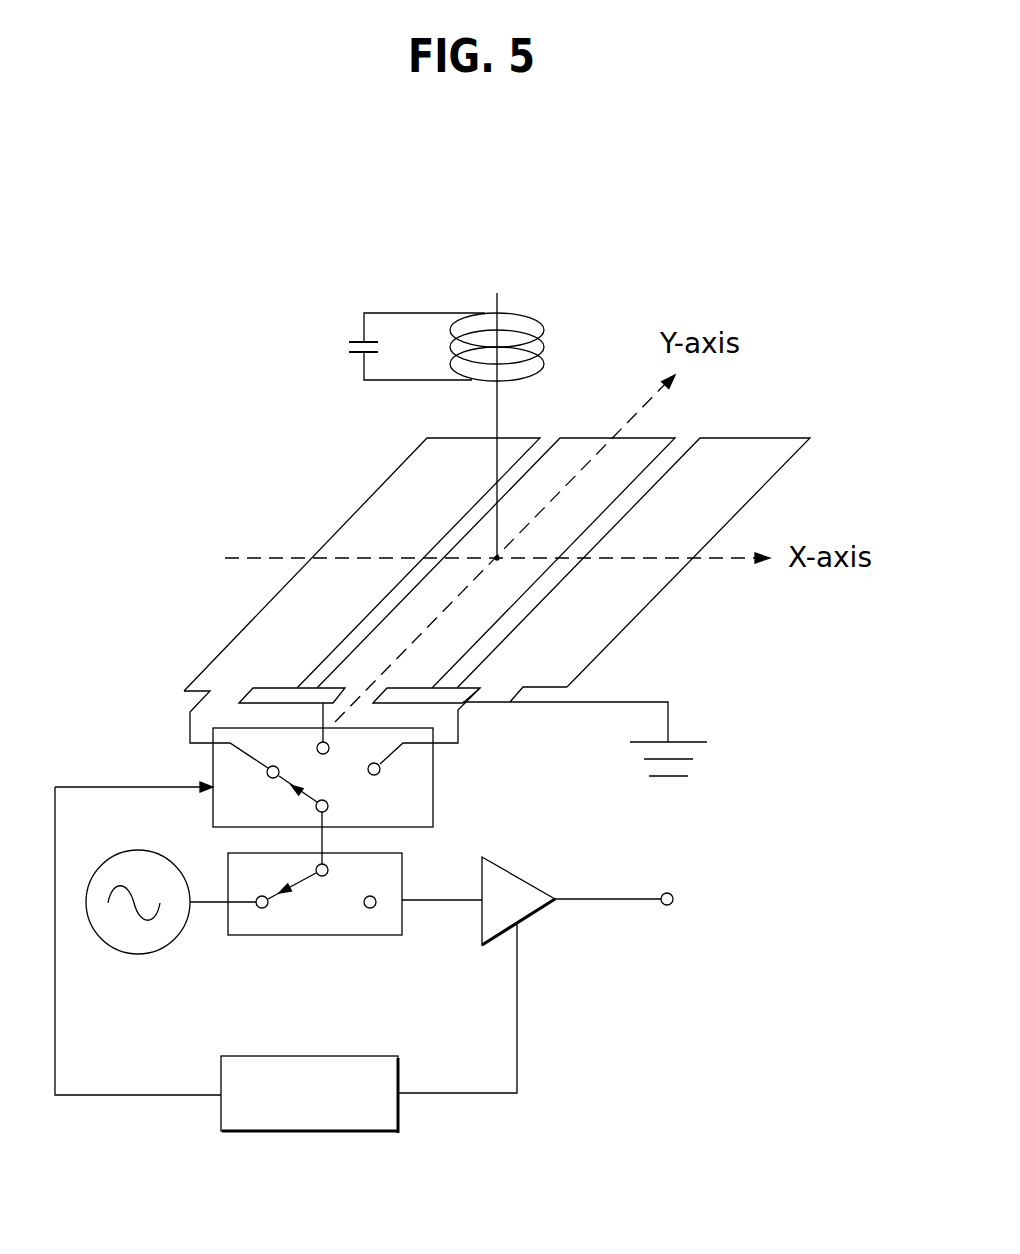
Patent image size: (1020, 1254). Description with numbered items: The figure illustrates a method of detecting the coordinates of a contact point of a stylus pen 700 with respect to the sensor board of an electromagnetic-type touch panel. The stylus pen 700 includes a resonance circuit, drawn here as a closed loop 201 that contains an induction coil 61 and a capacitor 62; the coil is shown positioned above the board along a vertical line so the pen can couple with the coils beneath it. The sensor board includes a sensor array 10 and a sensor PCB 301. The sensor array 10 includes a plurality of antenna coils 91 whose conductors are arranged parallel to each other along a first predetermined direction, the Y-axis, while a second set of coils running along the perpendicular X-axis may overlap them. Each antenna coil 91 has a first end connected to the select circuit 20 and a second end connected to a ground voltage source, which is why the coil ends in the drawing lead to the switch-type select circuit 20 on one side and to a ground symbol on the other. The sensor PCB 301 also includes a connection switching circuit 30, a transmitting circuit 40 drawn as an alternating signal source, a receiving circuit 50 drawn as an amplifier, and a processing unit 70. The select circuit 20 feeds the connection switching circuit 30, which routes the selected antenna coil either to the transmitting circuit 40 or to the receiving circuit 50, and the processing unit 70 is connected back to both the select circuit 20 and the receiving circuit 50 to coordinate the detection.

The stylus pen 700 is at (451, 373).
The resonant circuit loop 201 is at (387, 313).
The induction coil 61 is at (530, 318).
The capacitor 62 is at (349, 347).
The sensor array 10 is at (257, 502).
The antenna coils 91 is at (755, 437).
The select circuit 20 is at (433, 772).
The connection switching circuit 30 is at (313, 935).
The transmitting circuit 40 is at (137, 940).
The receiving circuit 50 is at (515, 885).
The processing unit 70 is at (310, 1120).
The sensor PCB 301 is at (826, 825).